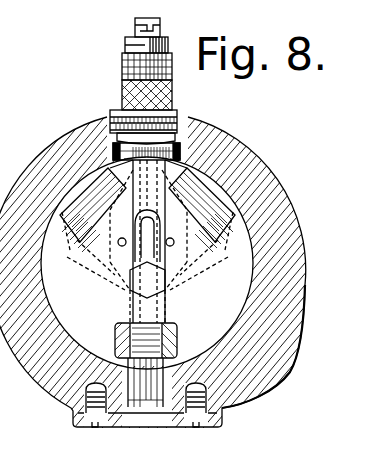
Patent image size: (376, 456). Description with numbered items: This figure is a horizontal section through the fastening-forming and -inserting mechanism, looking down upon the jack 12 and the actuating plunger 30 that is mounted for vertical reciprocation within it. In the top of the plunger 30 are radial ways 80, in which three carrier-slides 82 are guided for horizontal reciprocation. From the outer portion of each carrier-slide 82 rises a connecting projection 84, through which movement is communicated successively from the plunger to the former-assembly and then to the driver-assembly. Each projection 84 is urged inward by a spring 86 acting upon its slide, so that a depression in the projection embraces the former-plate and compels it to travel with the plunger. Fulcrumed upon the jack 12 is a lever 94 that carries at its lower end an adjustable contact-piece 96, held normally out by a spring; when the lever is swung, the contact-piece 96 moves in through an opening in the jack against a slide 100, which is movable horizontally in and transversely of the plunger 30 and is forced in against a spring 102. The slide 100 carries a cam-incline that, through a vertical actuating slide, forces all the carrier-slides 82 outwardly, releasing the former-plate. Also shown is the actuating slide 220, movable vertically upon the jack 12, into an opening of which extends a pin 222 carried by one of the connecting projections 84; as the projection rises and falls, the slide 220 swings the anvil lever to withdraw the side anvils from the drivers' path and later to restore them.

The jack 12 is at (220, 128).
The actuating plunger 30 is at (242, 306).
The lever 94 is at (127, 88).
The adjustable contact-piece 96 is at (180, 132).
The slide 100 is at (113, 142).
The connecting projection 84 is at (82, 240).
The radial ways 80 is at (198, 273).
The spring 86 is at (110, 345).
The carrier-slides 82 is at (195, 293).
The spring 102 is at (170, 310).
The pin 222 is at (132, 410).
The actuating slide 220 is at (166, 418).